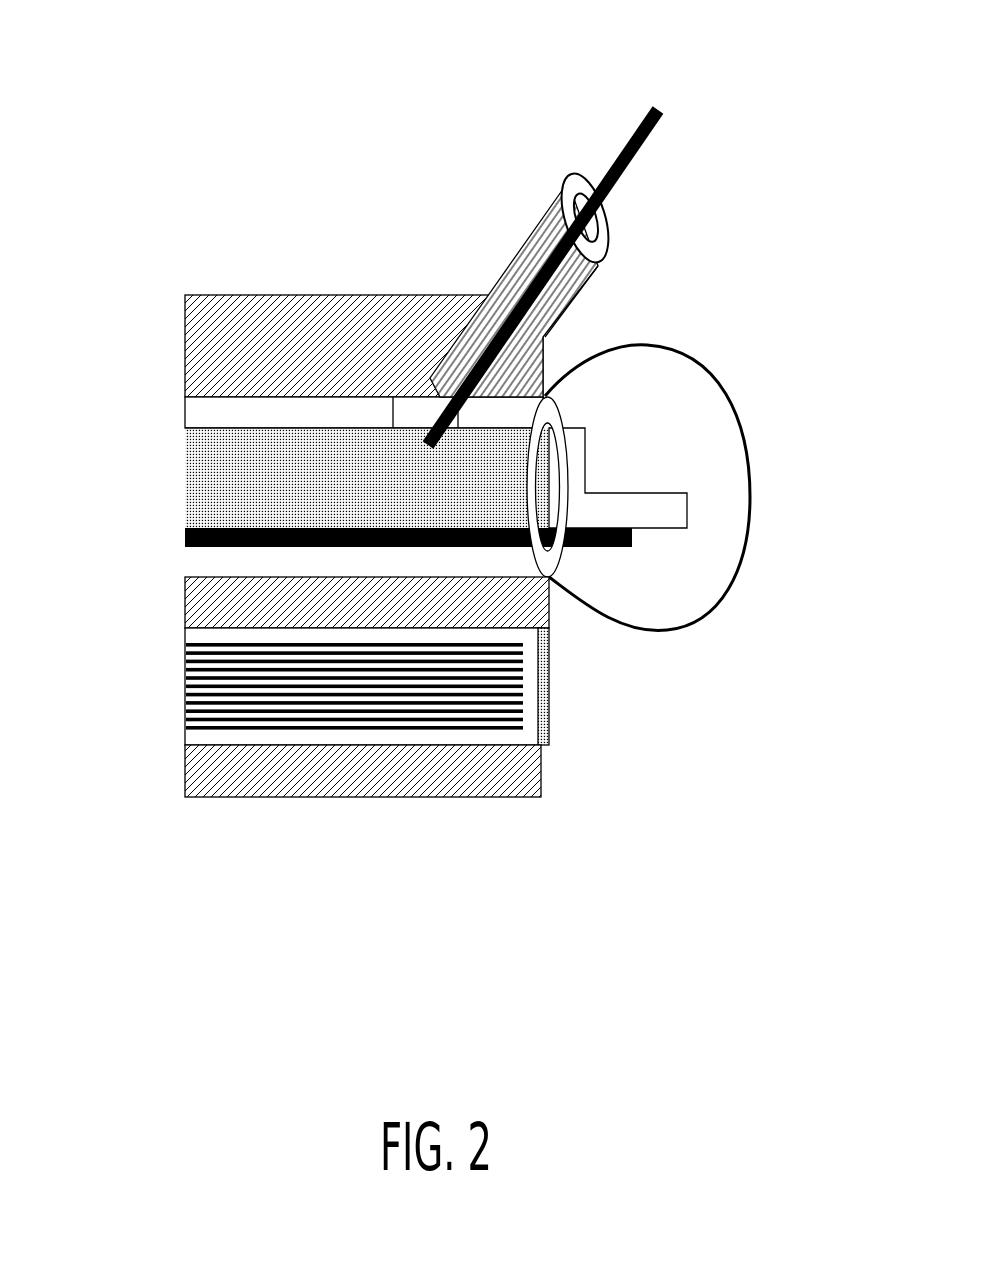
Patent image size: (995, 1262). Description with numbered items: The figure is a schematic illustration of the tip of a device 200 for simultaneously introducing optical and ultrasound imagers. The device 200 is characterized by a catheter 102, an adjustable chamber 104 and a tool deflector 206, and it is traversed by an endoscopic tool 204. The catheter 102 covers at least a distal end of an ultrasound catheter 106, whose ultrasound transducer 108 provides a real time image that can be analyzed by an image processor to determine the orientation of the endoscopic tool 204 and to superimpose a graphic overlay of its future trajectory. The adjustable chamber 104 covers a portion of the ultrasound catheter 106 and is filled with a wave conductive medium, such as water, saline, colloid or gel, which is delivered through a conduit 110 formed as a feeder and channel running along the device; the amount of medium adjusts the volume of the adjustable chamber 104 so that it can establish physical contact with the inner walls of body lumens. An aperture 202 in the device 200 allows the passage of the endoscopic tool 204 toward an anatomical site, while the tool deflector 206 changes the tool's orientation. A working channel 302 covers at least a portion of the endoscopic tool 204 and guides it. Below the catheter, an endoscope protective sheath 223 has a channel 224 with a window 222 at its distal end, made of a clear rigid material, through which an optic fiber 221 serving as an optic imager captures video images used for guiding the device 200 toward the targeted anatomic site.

The device 200 is at (248, 172).
The catheter 102 is at (246, 410).
The aperture 202 is at (402, 392).
The working channel 302 is at (478, 288).
The endoscopic tool 204 is at (660, 96).
The tool deflector 206 is at (545, 337).
The adjustable chamber 104 is at (751, 424).
The ultrasound catheter 106 is at (178, 495).
The conduit 110 is at (603, 549).
The ultrasound transducer 108 is at (658, 549).
The channel 224 is at (531, 678).
The window 222 is at (537, 750).
The optic fiber 221 is at (357, 697).
The endoscope protective sheath 223 is at (248, 745).